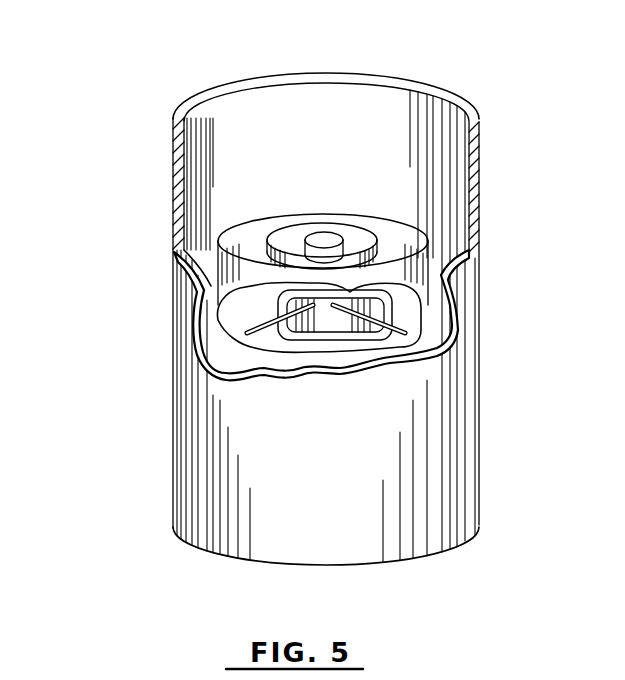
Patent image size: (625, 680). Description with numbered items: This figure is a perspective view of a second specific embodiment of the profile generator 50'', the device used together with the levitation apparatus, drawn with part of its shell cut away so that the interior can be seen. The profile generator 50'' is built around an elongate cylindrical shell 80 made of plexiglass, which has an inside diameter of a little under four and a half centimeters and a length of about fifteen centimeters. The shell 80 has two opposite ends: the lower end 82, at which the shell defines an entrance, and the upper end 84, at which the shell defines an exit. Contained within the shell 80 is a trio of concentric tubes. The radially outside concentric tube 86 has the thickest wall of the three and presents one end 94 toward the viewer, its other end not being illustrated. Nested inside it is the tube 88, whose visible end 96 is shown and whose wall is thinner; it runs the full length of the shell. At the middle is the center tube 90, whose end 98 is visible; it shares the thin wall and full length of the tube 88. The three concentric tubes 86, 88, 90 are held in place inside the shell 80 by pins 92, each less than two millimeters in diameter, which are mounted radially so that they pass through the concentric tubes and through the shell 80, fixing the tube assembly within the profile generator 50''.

The profile generator 50'' is at (280, 306).
The elongate cylindrical shell 80 is at (173, 414).
The end 82 is at (224, 553).
The end 84 is at (408, 82).
The radially outside concentric tube 86 is at (402, 226).
The tube 88 is at (282, 260).
The center tube 90 is at (278, 237).
The pins 92 is at (250, 325).
The end 94 is at (423, 232).
The end 96 is at (300, 247).
The end 98 is at (335, 232).